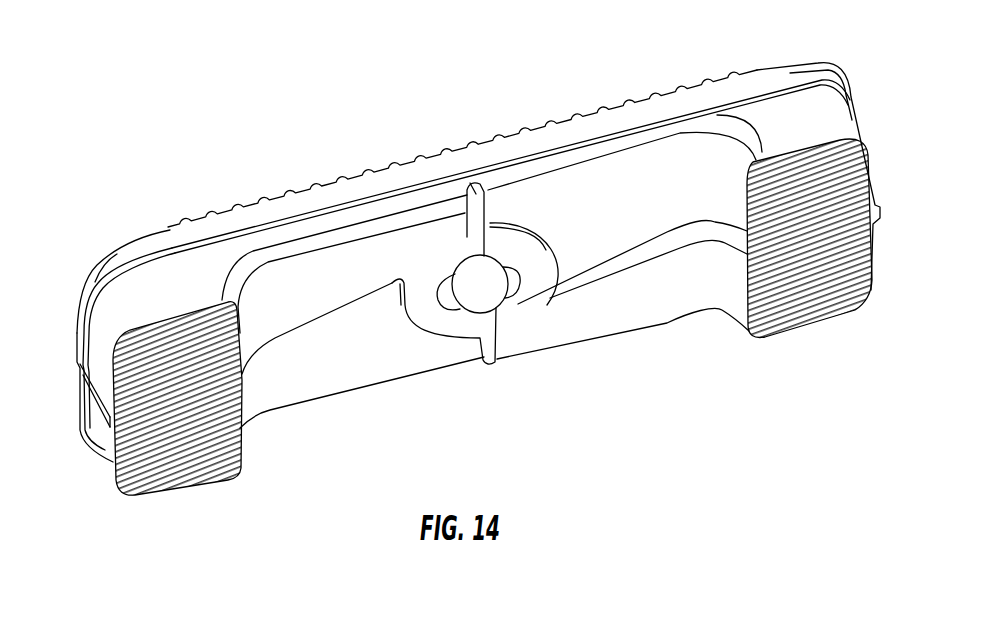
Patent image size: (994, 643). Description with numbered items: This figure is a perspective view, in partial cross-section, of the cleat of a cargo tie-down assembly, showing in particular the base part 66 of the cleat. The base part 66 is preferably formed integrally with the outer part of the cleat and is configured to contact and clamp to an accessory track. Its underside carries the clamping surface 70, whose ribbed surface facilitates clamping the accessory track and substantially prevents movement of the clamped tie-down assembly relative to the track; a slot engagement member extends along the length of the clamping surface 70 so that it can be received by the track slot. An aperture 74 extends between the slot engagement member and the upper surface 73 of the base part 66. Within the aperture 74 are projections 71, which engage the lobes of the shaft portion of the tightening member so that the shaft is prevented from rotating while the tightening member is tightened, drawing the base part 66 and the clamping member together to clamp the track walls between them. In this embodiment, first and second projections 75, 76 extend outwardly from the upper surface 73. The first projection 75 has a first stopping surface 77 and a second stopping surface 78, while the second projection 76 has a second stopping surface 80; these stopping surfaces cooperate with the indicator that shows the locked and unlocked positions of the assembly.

The base part 66 is at (84, 299).
The clamping surface 70 is at (333, 183).
The projections 71 is at (453, 302).
The upper surface 73 is at (653, 174).
The aperture 74 is at (483, 272).
The first projection 75 is at (305, 273).
The second projection 76 is at (670, 300).
The first stopping surface 77 is at (296, 333).
The second stopping surface 78 is at (486, 250).
The second stopping surface 80 is at (492, 368).